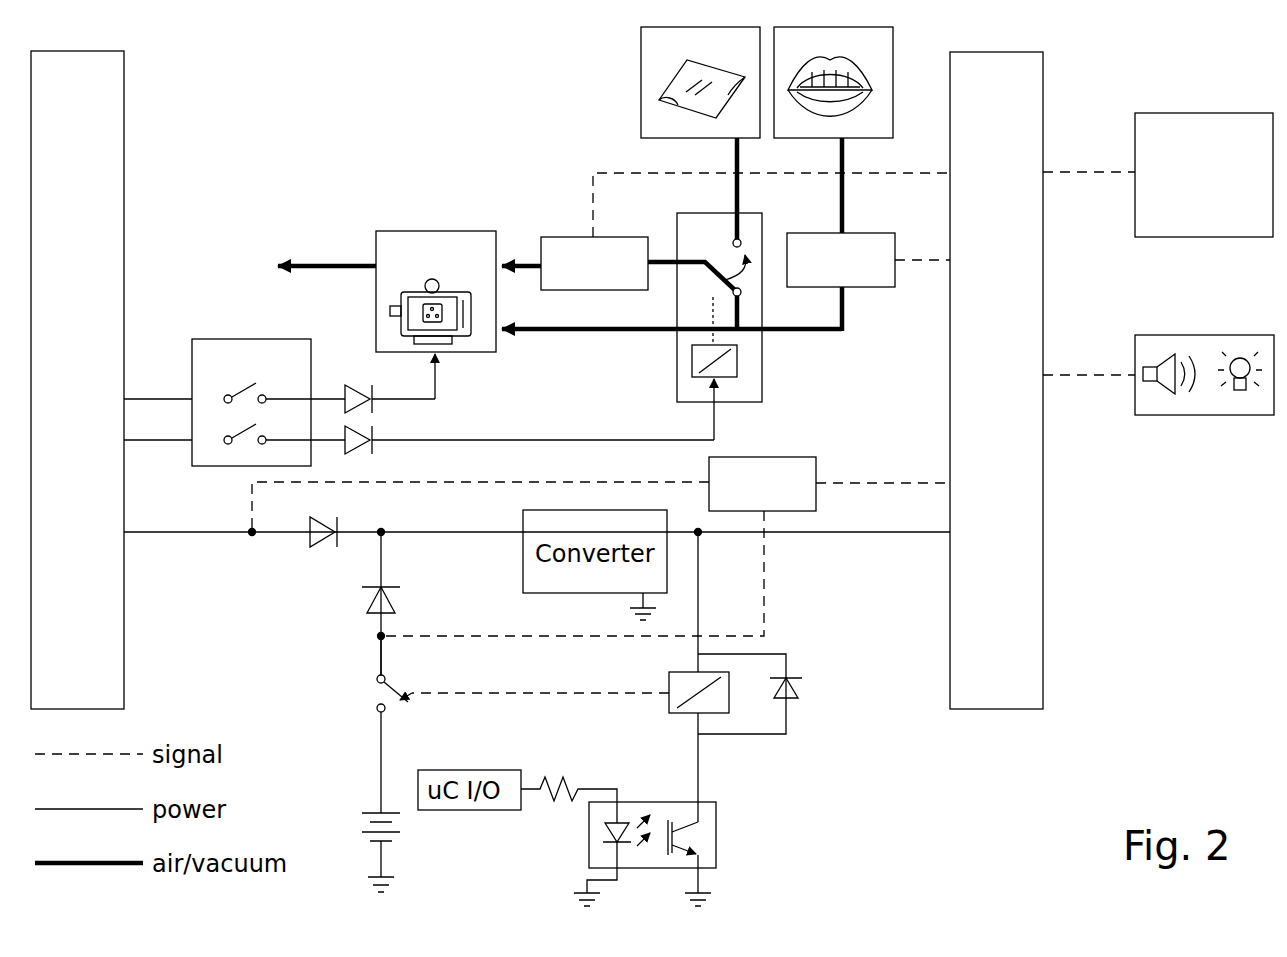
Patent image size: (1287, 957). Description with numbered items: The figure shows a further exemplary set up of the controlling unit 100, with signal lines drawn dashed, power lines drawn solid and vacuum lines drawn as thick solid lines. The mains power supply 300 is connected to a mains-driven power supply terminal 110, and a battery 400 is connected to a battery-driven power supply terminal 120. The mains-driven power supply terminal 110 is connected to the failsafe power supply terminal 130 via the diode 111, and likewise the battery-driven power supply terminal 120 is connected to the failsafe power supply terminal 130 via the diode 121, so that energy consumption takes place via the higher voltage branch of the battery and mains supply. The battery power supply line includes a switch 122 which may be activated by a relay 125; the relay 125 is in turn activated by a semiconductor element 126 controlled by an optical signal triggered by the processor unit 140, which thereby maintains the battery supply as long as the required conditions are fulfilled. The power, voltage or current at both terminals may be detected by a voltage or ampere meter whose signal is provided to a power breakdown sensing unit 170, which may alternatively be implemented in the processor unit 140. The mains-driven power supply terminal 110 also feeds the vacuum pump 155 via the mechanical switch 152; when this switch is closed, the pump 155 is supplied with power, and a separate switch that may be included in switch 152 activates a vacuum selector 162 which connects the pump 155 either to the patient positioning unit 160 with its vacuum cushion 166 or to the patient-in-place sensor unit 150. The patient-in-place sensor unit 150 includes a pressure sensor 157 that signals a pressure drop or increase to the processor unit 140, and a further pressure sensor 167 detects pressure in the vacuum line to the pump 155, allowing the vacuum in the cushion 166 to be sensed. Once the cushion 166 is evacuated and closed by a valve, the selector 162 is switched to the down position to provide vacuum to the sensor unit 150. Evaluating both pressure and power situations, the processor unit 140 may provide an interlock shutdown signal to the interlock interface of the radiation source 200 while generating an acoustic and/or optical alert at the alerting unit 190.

The controlling unit 100 is at (268, 106).
The mains-driven power supply terminal 110 is at (153, 415).
The diode 111 is at (318, 551).
The battery-driven power supply terminal 120 is at (378, 638).
The diode 121 is at (356, 604).
The switch 122 is at (492, 695).
The relay 125 is at (720, 677).
The semiconductor element 126 is at (676, 853).
The failsafe power supply terminal 130 is at (383, 534).
The processor unit 140 is at (996, 380).
The patient-in-place sensor unit 150 is at (868, 72).
The mechanical switch 152 is at (215, 433).
The vacuum pump 155 is at (384, 266).
The pressure sensor 157 is at (868, 234).
The patient positioning unit 160 is at (662, 44).
The vacuum selector 162 is at (762, 367).
The vacuum cushion 166 is at (668, 110).
The pressure sensor 167 is at (726, 231).
The power breakdown sensing unit 170 is at (601, 546).
The alerting unit 190 is at (1220, 415).
The radiation source 200 is at (1158, 175).
The mains power supply 300 is at (77, 380).
The battery 400 is at (362, 802).